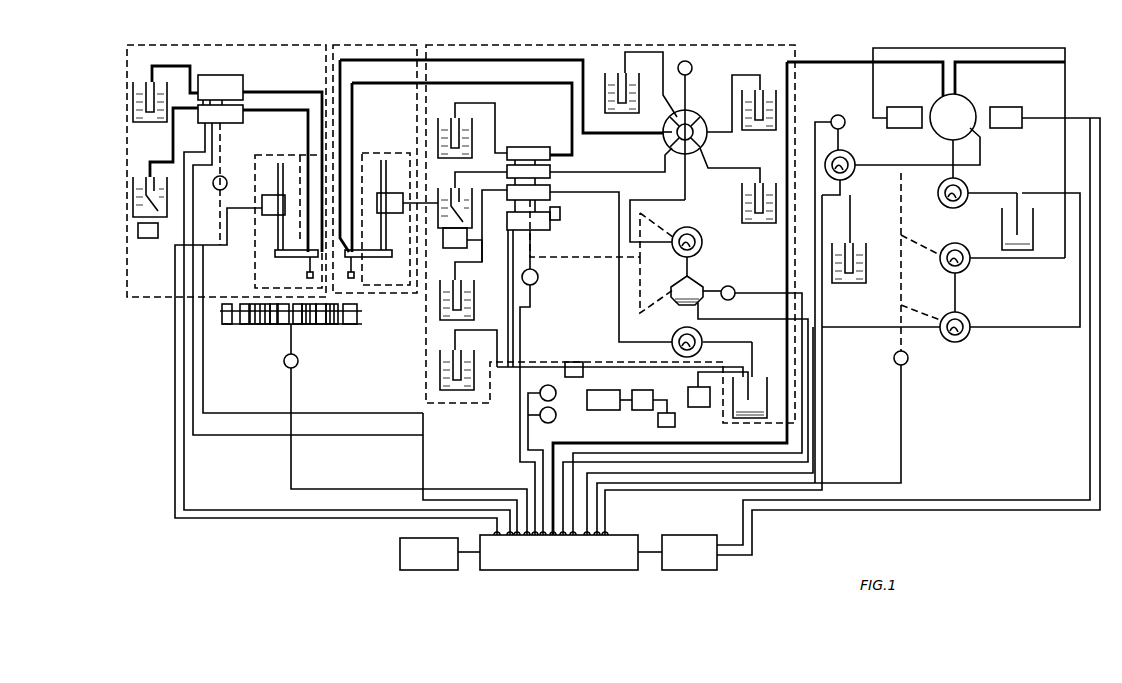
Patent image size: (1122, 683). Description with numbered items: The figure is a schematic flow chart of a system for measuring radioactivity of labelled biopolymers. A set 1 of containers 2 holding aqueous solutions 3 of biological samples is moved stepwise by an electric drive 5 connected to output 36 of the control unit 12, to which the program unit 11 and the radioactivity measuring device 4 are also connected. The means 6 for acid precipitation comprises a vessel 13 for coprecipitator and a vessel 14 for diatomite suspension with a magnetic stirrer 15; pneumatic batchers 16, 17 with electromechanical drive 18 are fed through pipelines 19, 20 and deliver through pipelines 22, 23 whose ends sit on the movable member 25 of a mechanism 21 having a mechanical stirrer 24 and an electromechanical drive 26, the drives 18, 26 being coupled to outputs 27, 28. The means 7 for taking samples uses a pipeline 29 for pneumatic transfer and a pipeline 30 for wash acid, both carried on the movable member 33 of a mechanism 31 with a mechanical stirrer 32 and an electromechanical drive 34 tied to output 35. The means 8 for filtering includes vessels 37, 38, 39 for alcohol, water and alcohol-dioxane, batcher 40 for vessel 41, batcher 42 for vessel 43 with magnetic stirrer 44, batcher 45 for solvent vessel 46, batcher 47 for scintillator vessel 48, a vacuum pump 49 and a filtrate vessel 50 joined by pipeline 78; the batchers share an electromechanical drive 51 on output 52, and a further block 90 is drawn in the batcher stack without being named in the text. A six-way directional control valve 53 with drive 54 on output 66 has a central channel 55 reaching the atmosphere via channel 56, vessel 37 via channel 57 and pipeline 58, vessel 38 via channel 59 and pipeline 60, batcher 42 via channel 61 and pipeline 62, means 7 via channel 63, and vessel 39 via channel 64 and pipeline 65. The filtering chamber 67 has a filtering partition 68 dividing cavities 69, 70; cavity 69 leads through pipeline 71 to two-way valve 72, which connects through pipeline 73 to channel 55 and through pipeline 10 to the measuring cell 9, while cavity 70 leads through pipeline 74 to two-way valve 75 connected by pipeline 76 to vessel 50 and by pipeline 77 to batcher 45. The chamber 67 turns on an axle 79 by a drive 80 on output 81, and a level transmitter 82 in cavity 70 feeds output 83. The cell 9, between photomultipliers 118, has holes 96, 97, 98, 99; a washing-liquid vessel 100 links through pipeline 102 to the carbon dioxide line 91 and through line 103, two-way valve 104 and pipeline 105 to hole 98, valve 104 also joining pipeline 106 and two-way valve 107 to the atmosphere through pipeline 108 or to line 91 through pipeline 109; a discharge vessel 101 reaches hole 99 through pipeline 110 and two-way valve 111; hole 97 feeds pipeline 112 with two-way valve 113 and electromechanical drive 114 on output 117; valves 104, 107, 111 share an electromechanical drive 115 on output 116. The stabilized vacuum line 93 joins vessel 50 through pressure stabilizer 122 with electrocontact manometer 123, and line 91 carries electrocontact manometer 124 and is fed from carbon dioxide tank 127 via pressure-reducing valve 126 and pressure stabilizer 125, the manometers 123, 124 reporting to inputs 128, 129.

The set of containers 1 is at (268, 328).
The containers 2 is at (236, 328).
The aqueous solutions 3 is at (350, 328).
The radioactivity measuring device 4 is at (677, 552).
The electric drive 5 is at (298, 361).
The means for acid precipitation of biopolymers 6 is at (166, 300).
The means for taking precipitated samples 7 is at (378, 300).
The means for filtering precipitated biopolymers 8 is at (426, 351).
The measuring cell 9 is at (975, 103).
The pipeline 10 is at (840, 62).
The program unit 11 is at (440, 554).
The control unit 12 is at (475, 568).
The vessel for coprecipitator solution 13 is at (165, 106).
The vessel for diatomite suspension 14 is at (160, 216).
The magnetic stirrer 15 is at (149, 242).
The pneumatic batcher 16 is at (224, 82).
The pneumatic batcher 17 is at (237, 120).
The electromechanical drive 18 is at (227, 181).
The pipeline 19 is at (184, 66).
The pipeline 20 is at (150, 162).
The mechanism for reciprocating motion 21 is at (254, 260).
The pipeline 22 is at (283, 90).
The pipeline 23 is at (273, 112).
The mechanical stirrer 24 is at (306, 273).
The movable member 25 is at (280, 258).
The electromechanical drive 26 is at (262, 210).
The output 27 is at (500, 537).
The output 28 is at (512, 537).
The pipeline 29 is at (378, 66).
The pipeline 30 is at (462, 167).
The mechanism for reciprocating motion 31 is at (375, 152).
The mechanical stirrer 32 is at (358, 274).
The movable member 33 is at (388, 222).
The electromechanical drive 34 is at (393, 192).
The output 35 is at (522, 537).
The output 36 is at (530, 537).
The vessel for alcohol 37 is at (768, 88).
The vessel for water 38 is at (742, 204).
The vessel for alcohol-dioxane solution 39 is at (607, 110).
The pneumatic batcher 40 is at (514, 146).
The vessel for trichloracetic acid solution 41 is at (446, 116).
The pneumatic batcher 42 is at (540, 164).
The vessel for diatomite suspension 43 is at (448, 187).
The magnetic stirrer 44 is at (452, 248).
The pneumatic batcher 45 is at (550, 192).
The vessel for biopolymer solvent 46 is at (475, 310).
The pneumatic batcher 47 is at (533, 232).
The vessel for scintillator 48 is at (478, 364).
The vacuum pump 49 is at (699, 397).
The vessel for filtrate 50 is at (768, 402).
The electromechanical drive 51 is at (538, 281).
The output 52 is at (545, 538).
The six-way directional control valve 53 is at (694, 124).
The electromechanical drive 54 is at (692, 68).
The central channel 55 is at (714, 153).
The channel 56 is at (684, 124).
The channel 57 is at (702, 126).
The pipeline 58 is at (756, 88).
The channel 59 is at (700, 140).
The pipeline 60 is at (750, 174).
The channel 61 is at (670, 143).
The pipeline 62 is at (607, 171).
The channel 63 is at (663, 136).
The channel 64 is at (667, 118).
The pipeline 65 is at (624, 54).
The output 66 is at (588, 542).
The filtering chamber 67 is at (722, 284).
The filtering partition 68 is at (672, 292).
The cavity 69 is at (679, 280).
The cavity 70 is at (680, 306).
The pipeline 71 is at (689, 280).
The two-way valve 72 is at (700, 232).
The pipeline 73 is at (664, 205).
The pipeline 74 is at (672, 338).
The two-way valve 75 is at (716, 346).
The pipeline 76 is at (755, 360).
The pipeline 77 is at (618, 290).
The pipeline 78 is at (696, 376).
The axle 79 is at (732, 288).
The drive 80 is at (742, 291).
The output 81 is at (597, 538).
The level transmitter 82 is at (742, 316).
The output 83 is at (608, 538).
The valve block 90 is at (560, 213).
The line for supply of compressed carbon dioxide 91 is at (365, 440).
The stabilized vacuum line 93 is at (372, 412).
The hole 96 is at (942, 94).
The hole 97 is at (985, 140).
The hole 98 is at (957, 95).
The hole 99 is at (952, 146).
The vessel for washing liquid 100 is at (866, 264).
The vessel for discharge of mixture 101 is at (1034, 223).
The pipeline 102 is at (836, 232).
The line 103 is at (940, 230).
The two-way valve 104 is at (970, 250).
The pipeline 105 is at (1044, 268).
The pipeline 106 is at (956, 296).
The two-way valve 107 is at (970, 320).
The pipeline 108 is at (1023, 328).
The pipeline 109 is at (855, 328).
The pipeline 110 is at (975, 190).
The two-way valve 111 is at (966, 203).
The pipeline 112 is at (896, 163).
The two-way valve 113 is at (852, 160).
The electromechanical drive 114 is at (847, 113).
The electromechanical drive 115 is at (908, 362).
The output 116 is at (620, 520).
The output 117 is at (660, 530).
The photomultipliers 118 is at (898, 106).
The pressure stabilizer 122 is at (576, 361).
The electrocontact manometer 123 is at (556, 393).
The electrocontact manometer 124 is at (556, 415).
The pressure stabilizer 125 is at (676, 421).
The pressure-reducing valve 126 is at (646, 411).
The carbon dioxide tank 127 is at (609, 400).
The input 128 is at (550, 530).
The input 129 is at (575, 540).